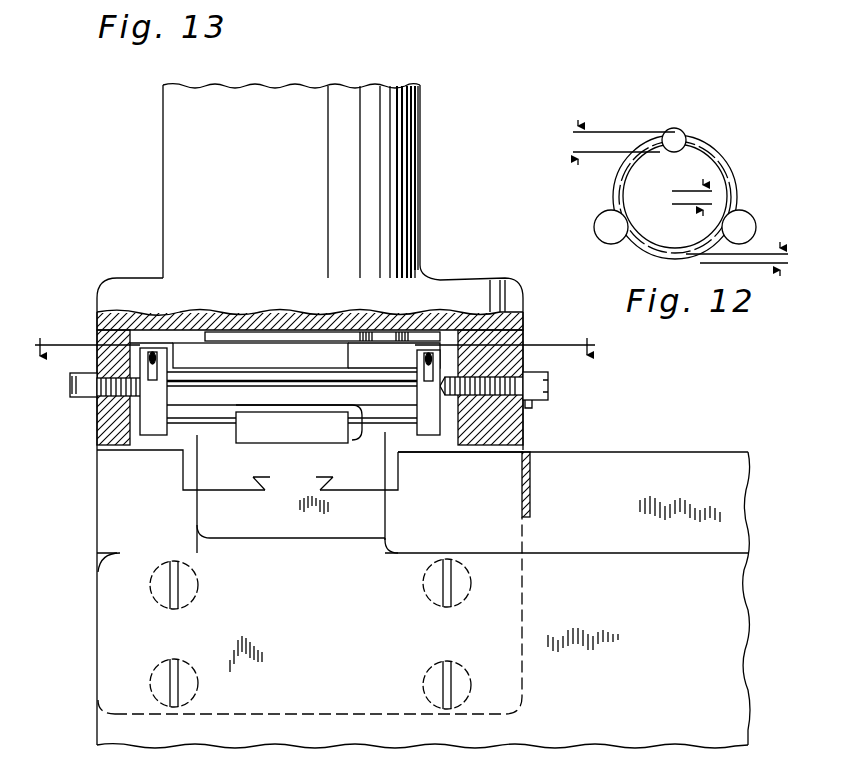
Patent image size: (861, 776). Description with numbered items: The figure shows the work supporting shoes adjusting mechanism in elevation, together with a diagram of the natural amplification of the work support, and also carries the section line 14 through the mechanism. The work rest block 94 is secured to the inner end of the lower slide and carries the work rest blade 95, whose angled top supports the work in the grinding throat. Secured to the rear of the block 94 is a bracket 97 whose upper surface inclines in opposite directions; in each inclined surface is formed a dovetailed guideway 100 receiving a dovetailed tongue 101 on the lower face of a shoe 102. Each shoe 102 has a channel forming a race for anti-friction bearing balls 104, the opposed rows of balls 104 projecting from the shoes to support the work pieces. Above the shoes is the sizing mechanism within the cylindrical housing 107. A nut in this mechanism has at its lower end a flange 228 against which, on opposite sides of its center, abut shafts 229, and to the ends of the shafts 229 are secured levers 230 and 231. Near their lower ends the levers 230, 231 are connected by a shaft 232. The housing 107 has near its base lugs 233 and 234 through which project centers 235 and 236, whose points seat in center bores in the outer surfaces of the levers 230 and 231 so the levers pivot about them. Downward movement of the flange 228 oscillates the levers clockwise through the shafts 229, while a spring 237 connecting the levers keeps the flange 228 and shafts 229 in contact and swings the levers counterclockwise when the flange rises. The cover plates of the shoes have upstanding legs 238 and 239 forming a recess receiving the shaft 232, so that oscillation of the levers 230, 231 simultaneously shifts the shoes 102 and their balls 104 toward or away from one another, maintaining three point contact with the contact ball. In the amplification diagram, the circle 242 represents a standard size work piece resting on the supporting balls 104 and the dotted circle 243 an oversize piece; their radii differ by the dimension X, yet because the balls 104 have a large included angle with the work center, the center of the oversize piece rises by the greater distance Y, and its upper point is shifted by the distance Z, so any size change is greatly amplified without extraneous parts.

In FIG. 13, the cylindrical housing 107 is at (420, 228).
In FIG. 13, the flange 228 is at (193, 358).
In FIG. 13, the shafts 229 is at (235, 372).
In FIG. 13, the lever 230 is at (163, 434).
In FIG. 13, the lever 231 is at (428, 436).
In FIG. 13, the shaft 232 is at (186, 440).
In FIG. 13, the lug 233 is at (112, 432).
In FIG. 13, the lug 234 is at (505, 441).
In FIG. 13, the center 235 is at (70, 390).
In FIG. 13, the center 236 is at (550, 395).
In FIG. 13, the spring 237 is at (430, 365).
In FIG. 13, the upstanding leg 238 is at (360, 442).
In FIG. 13, the upstanding leg 239 is at (286, 442).
In FIG. 13, the section line 14- 14 is at (313, 367).
In FIG. 13, the work rest block 94 is at (422, 632).
In FIG. 13, the work rest blade 95 is at (574, 588).
In FIG. 13, the bracket 97 is at (210, 530).
In FIG. 13, the dovetailed guideway 100 is at (266, 480).
In FIG. 13, the dovetailed tongue 101 is at (250, 494).
In FIG. 13, the shoe 102 is at (190, 476).
In FIG. 12, the circle 242 is at (620, 184).
In FIG. 12, the dotted line circle 243 is at (716, 160).
In FIG. 12, the anti-friction bearing balls 104 is at (752, 219).
In FIG. 12, the dimension x X is at (790, 262).
In FIG. 12, the distance y Y is at (710, 200).
In FIG. 12, the distance z Z is at (623, 142).